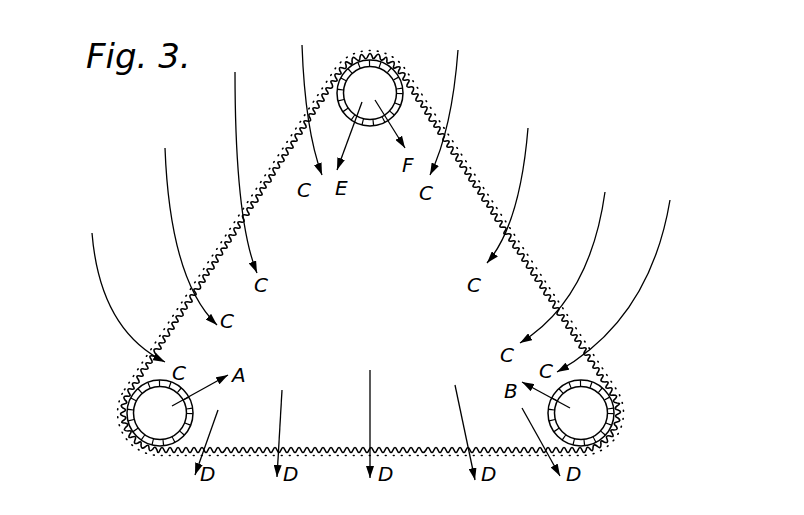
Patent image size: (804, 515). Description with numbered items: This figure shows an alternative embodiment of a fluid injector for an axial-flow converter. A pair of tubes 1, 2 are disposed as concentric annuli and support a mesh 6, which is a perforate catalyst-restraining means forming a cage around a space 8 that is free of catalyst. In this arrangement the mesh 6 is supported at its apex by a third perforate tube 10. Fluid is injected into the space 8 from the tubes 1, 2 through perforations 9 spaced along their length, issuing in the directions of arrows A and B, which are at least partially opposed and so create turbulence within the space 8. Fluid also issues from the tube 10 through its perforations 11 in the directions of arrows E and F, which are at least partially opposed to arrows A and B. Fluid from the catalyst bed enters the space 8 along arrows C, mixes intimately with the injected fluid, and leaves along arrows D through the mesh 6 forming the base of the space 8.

The tube 1 is at (173, 446).
The tube 2 is at (598, 392).
The mesh 6 is at (228, 237).
The space 8 is at (378, 293).
The perforations 9 is at (188, 405).
The third perforate tube 10 is at (407, 90).
The perforations 11 is at (383, 123).